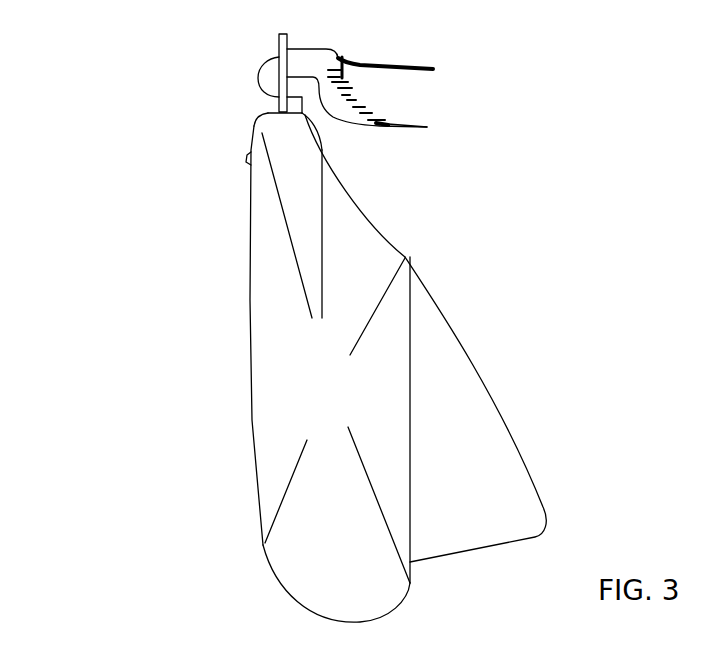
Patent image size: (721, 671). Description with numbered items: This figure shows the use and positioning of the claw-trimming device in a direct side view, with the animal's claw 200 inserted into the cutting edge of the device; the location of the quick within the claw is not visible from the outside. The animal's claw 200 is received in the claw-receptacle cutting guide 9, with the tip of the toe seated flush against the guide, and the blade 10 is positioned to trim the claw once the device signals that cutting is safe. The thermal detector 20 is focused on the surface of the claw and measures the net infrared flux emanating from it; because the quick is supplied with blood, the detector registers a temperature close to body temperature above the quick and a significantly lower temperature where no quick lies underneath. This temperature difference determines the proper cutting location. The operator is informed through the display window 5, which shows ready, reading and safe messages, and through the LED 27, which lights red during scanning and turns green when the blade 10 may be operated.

The display window 5 is at (243, 228).
The claw-receptacle cutting guide 9 is at (268, 106).
The blade 10 is at (293, 34).
The thermal detector 20 is at (308, 108).
The LED 27 is at (247, 158).
The animal's claw 200 is at (260, 72).